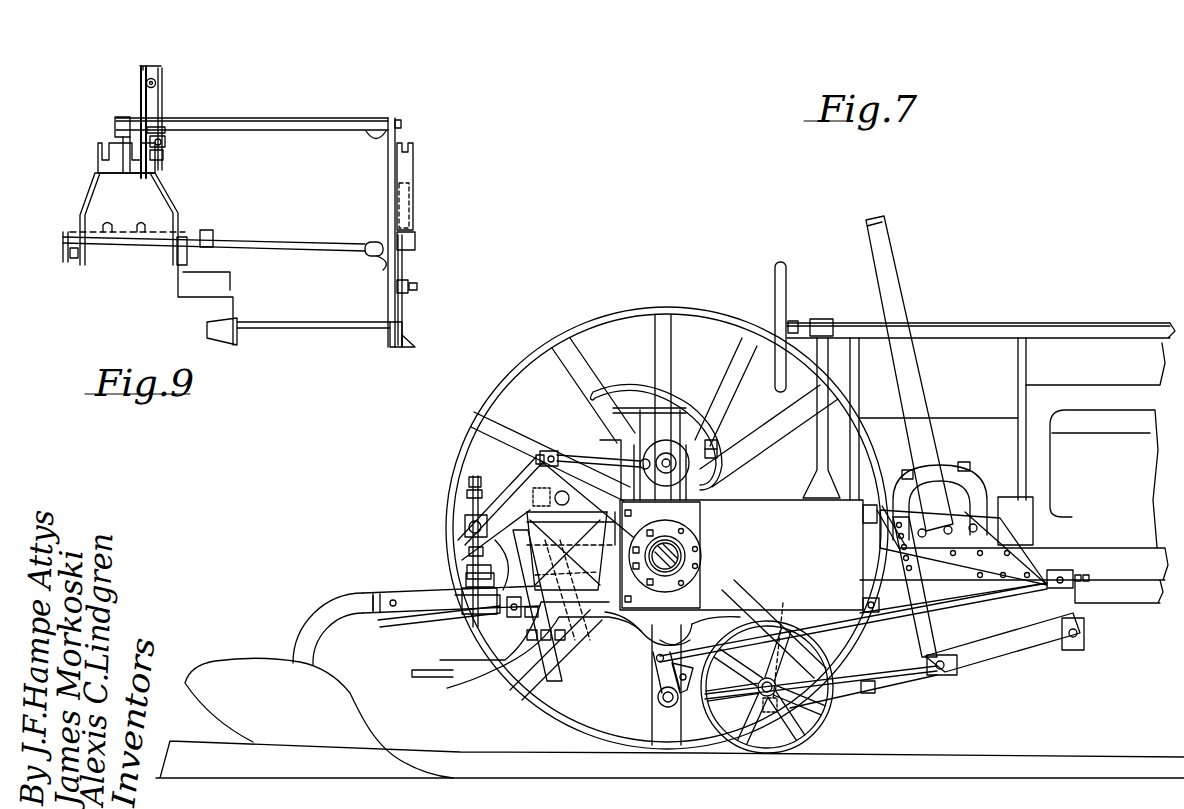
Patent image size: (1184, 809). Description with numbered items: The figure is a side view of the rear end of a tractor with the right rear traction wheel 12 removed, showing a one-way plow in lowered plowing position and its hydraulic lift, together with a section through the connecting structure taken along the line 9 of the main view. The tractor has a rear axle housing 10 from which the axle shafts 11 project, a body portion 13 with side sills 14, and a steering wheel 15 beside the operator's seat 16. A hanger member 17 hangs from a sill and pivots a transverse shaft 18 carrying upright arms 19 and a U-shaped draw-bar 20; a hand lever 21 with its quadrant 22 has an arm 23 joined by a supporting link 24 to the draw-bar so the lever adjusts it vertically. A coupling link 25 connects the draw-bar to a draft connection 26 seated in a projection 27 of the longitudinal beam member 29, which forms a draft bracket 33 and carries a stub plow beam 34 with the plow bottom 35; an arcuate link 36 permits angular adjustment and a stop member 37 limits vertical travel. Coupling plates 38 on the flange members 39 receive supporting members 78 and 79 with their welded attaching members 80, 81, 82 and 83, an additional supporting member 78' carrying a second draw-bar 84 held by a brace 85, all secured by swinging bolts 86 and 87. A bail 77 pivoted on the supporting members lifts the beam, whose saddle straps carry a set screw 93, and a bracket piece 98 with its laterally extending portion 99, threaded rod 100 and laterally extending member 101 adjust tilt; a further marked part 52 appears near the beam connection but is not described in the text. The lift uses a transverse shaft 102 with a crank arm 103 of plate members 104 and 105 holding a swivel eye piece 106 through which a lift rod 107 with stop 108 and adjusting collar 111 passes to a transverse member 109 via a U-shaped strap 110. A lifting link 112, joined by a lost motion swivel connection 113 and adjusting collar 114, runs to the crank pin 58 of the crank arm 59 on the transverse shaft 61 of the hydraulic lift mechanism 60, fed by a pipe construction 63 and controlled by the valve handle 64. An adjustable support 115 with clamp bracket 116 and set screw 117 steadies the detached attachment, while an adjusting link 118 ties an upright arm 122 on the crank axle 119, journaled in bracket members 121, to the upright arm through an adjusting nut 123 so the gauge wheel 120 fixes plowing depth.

In FIG. 7, the section line 9 is at (617, 447).
In FIG. 7, the rear axle housing 10 is at (690, 560).
In FIG. 7, the axle shafts 11 is at (687, 574).
In FIG. 7, the traction wheels 12 is at (728, 323).
In FIG. 7, the body portion 13 is at (812, 508).
In FIG. 7, the side sills 14 is at (1073, 557).
In FIG. 7, the steering wheel 15 is at (792, 262).
In FIG. 7, the operator's seat 16 is at (646, 392).
In FIG. 7, the hanger member 17 is at (1010, 560).
In FIG. 7, the transverse shaft 18 is at (1087, 630).
In FIG. 7, the upright arms 19 is at (1073, 590).
In FIG. 7, the draw-bar 20 is at (1003, 643).
In FIG. 7, the hand lever 21 is at (886, 297).
In FIG. 7, the quadrant 22 is at (958, 468).
In FIG. 7, the arm 23 is at (900, 562).
In FIG. 7, the supporting link 24 is at (927, 615).
In FIG. 7, the coupling link 25 is at (935, 673).
In FIG. 7, the draft connection 26 is at (822, 714).
In FIG. 7, the projection 27 is at (825, 722).
In FIG. 7, the longitudinal beam member 29 is at (638, 663).
In FIG. 7, the draft bracket 33 is at (780, 708).
In FIG. 7, the stub plow beam 34 is at (335, 607).
In FIG. 7, the plow bottom 35 is at (332, 690).
In FIG. 7, the arcuate link 36 is at (883, 692).
In FIG. 7, the stop member 37 is at (782, 640).
In FIG. 7, the coupling plates 38 is at (703, 537).
In FIG. 7, the flange members 39 is at (693, 550).
In FIG. 7, the beam connection 52 is at (370, 593).
In FIG. 7, the crank pin 58 is at (641, 446).
In FIG. 7, the crank arm 59 is at (692, 511).
In FIG. 7, the hydraulic lift mechanism 60 is at (655, 457).
In FIG. 7, the transverse shaft 61 is at (672, 458).
In FIG. 7, the pipe construction 63 is at (723, 460).
In FIG. 7, the valve handle 64 is at (720, 442).
In FIG. 9, the bail 77 is at (255, 238).
In FIG. 7, the bail 77 is at (500, 580).
In FIG. 9, the supporting member 78 is at (99, 218).
In FIG. 7, the supporting member 78 is at (677, 625).
In FIG. 9, the additional supporting member 78' is at (186, 219).
In FIG. 9, the supporting member 79 is at (383, 267).
In FIG. 9, the attaching member 80 is at (98, 155).
In FIG. 7, the attaching member 80 is at (600, 546).
In FIG. 9, the attaching member 81 is at (148, 153).
In FIG. 9, the attaching member 82 is at (97, 215).
In FIG. 7, the attaching member 82 is at (571, 572).
In FIG. 9, the attaching member 83 is at (407, 180).
In FIG. 9, the draw-bar 84 is at (283, 328).
In FIG. 7, the draw-bar 84 is at (417, 677).
In FIG. 9, the brace 85 is at (377, 121).
In FIG. 7, the swinging bolt 86 is at (608, 520).
In FIG. 7, the swinging bolt 87 is at (630, 612).
In FIG. 7, the set screw 93 is at (499, 540).
In FIG. 7, the bracket piece 98 is at (498, 637).
In FIG. 7, the laterally extending portion 99 is at (490, 617).
In FIG. 7, the threaded rod 100 is at (457, 597).
In FIG. 7, the laterally extending member 101 is at (467, 613).
In FIG. 9, the transverse shaft 102 is at (300, 123).
In FIG. 7, the transverse shaft 102 is at (556, 496).
In FIG. 9, the crank arm 103 is at (149, 70).
In FIG. 7, the crank arm 103 is at (537, 456).
In FIG. 9, the plate member 104 is at (140, 100).
In FIG. 7, the plate member 104 is at (508, 480).
In FIG. 9, the plate member 105 is at (163, 90).
In FIG. 9, the swivel eye piece 106 is at (162, 147).
In FIG. 7, the swivel eye piece 106 is at (465, 510).
In FIG. 9, the lift rod 107 is at (157, 130).
In FIG. 7, the lift rod 107 is at (470, 478).
In FIG. 7, the stop 108 is at (468, 493).
In FIG. 7, the transverse member 109 is at (458, 593).
In FIG. 7, the U-shaped strap 110 is at (463, 567).
In FIG. 7, the adjusting collar 111 is at (463, 547).
In FIG. 9, the lifting link 112 is at (162, 74).
In FIG. 7, the lifting link 112 is at (596, 458).
In FIG. 9, the lost motion swivel connection 113 is at (143, 93).
In FIG. 7, the lost motion swivel connection 113 is at (553, 452).
In FIG. 7, the adjusting collar 114 is at (538, 453).
In FIG. 9, the adjustable support 115 is at (405, 243).
In FIG. 7, the adjustable support 115 is at (520, 697).
In FIG. 9, the clamp bracket 116 is at (410, 282).
In FIG. 9, the set screw 117 is at (417, 288).
In FIG. 7, the adjusting link 118 is at (870, 620).
In FIG. 7, the crank axle 119 is at (656, 706).
In FIG. 7, the gauge wheel 120 is at (690, 753).
In FIG. 7, the bracket members 121 is at (663, 656).
In FIG. 7, the upright arm 122 is at (700, 622).
In FIG. 7, the adjusting nut 123 is at (1063, 570).